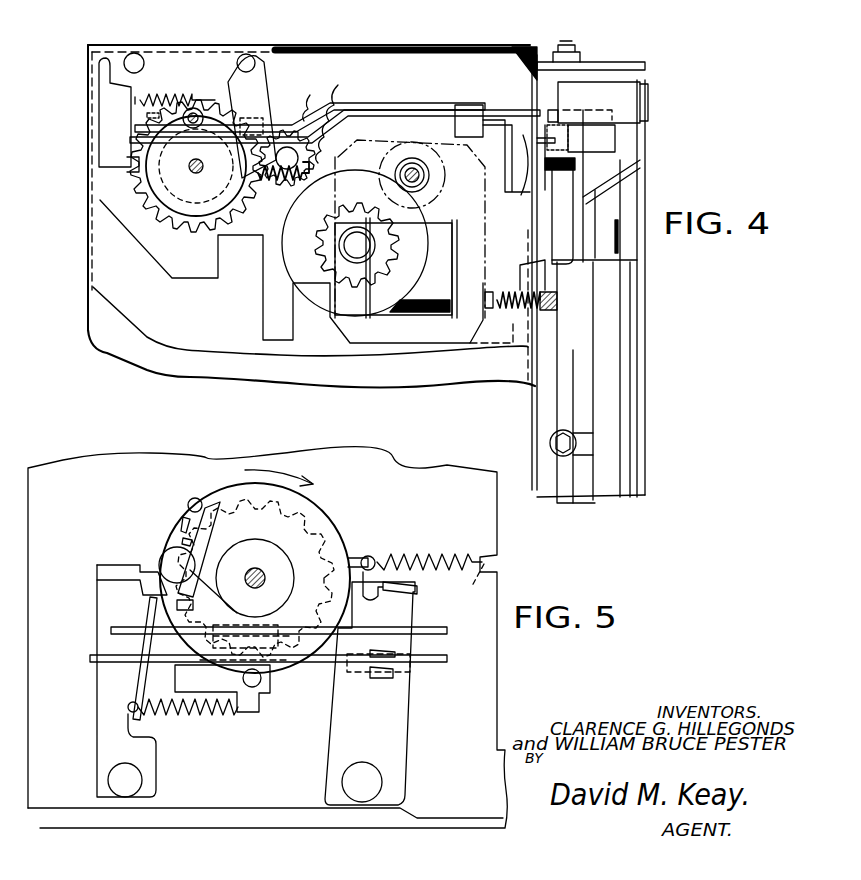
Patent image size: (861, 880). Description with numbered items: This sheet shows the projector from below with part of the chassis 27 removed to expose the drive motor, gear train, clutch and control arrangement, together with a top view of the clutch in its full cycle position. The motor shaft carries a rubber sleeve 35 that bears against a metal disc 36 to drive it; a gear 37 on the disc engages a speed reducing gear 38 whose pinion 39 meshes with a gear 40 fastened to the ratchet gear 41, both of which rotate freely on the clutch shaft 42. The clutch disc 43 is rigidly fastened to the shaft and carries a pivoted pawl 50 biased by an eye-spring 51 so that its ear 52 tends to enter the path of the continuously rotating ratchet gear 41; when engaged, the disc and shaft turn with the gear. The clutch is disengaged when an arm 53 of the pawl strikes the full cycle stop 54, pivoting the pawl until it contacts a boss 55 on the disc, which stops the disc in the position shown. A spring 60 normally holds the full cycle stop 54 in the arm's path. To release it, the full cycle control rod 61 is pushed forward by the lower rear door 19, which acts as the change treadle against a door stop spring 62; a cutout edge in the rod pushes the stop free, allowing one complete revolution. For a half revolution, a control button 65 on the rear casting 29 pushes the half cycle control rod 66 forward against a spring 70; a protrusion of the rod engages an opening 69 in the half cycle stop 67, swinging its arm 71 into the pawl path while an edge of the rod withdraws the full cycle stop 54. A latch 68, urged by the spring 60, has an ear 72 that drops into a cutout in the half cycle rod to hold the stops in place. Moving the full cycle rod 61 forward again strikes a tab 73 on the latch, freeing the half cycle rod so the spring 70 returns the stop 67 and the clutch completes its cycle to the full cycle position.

In FIG. 4, the lower rear door 19 is at (645, 311).
In FIG. 4, the chassis 27 is at (222, 46).
In FIG. 5, the chassis 27 is at (497, 690).
In FIG. 4, the rear casting 29 is at (632, 70).
In FIG. 4, the rubber sleeve 35 is at (430, 180).
In FIG. 4, the metal disc 36 is at (418, 216).
In FIG. 4, the gear 37 is at (400, 246).
In FIG. 4, the speed reducing gear 38 is at (326, 97).
In FIG. 4, the pinion 39 is at (304, 150).
In FIG. 4, the gear 40 is at (160, 222).
In FIG. 4, the ratchet gear 41 is at (138, 200).
In FIG. 5, the ratchet gear 41 is at (300, 512).
In FIG. 4, the clutch shaft 42 is at (193, 172).
In FIG. 5, the clutch shaft 42 is at (268, 574).
In FIG. 4, the clutch disc 43 is at (200, 225).
In FIG. 5, the clutch disc 43 is at (343, 536).
In FIG. 5, the pawl 50 is at (173, 547).
In FIG. 5, the eye-spring 51 is at (197, 578).
In FIG. 5, the ear 52 is at (186, 526).
In FIG. 5, the arm 53 is at (152, 577).
In FIG. 4, the full cycle stop 54 is at (117, 140).
In FIG. 5, the full cycle stop 54 is at (96, 598).
In FIG. 5, the boss 55 is at (193, 498).
In FIG. 4, the spring 60 is at (168, 98).
In FIG. 5, the spring 60 is at (210, 718).
In FIG. 4, the full cycle control rod 61 is at (430, 110).
In FIG. 5, the full cycle control rod 61 is at (428, 630).
In FIG. 4, the door stop spring 62 is at (492, 314).
In FIG. 4, the control button 65 is at (610, 136).
In FIG. 4, the half cycle control rod 66 is at (366, 103).
In FIG. 5, the half cycle control rod 66 is at (312, 666).
In FIG. 4, the half cycle stop 67 is at (265, 88).
In FIG. 5, the half cycle stop 67 is at (400, 740).
In FIG. 4, the latch 68 is at (199, 108).
In FIG. 5, the latch 68 is at (268, 696).
In FIG. 5, the opening 69 is at (400, 680).
In FIG. 4, the spring 70 is at (290, 184).
In FIG. 5, the spring 70 is at (418, 560).
In FIG. 5, the arm 71 is at (420, 592).
In FIG. 5, the ear 72 is at (175, 665).
In FIG. 5, the tab 73 is at (280, 626).